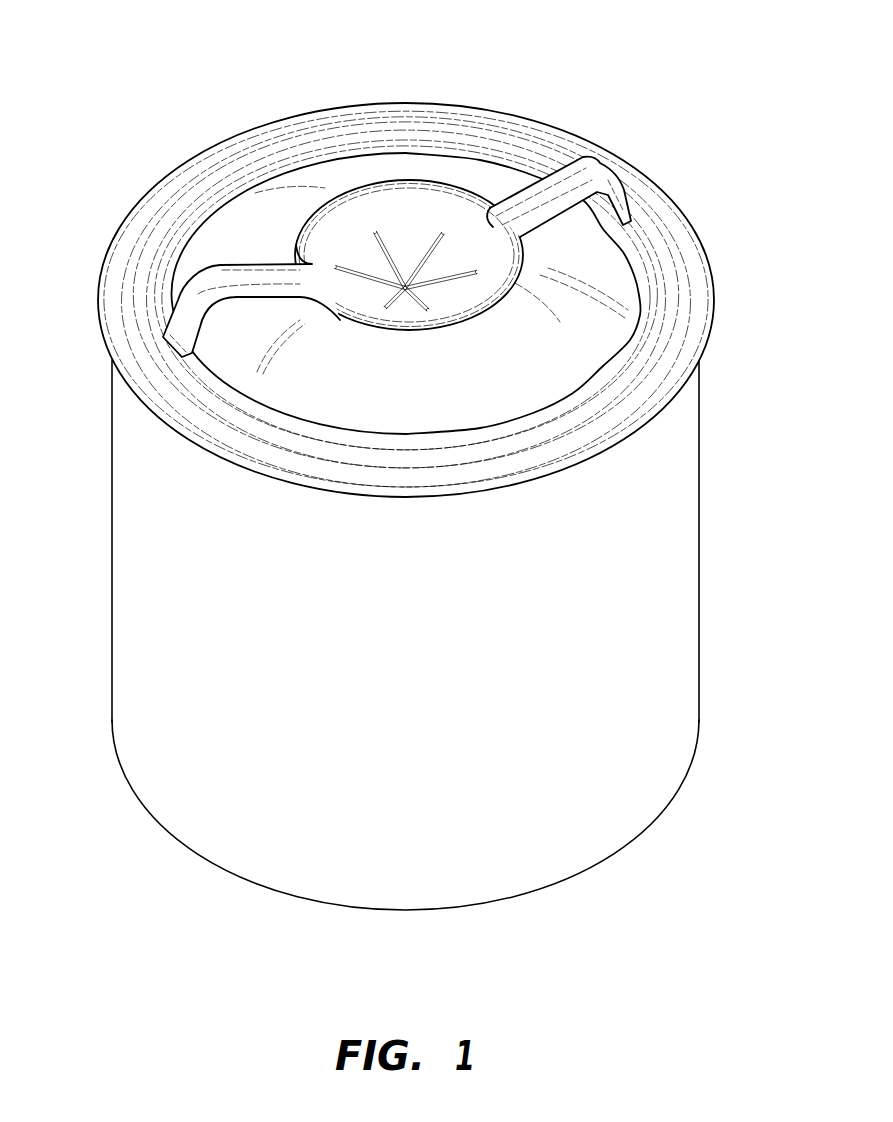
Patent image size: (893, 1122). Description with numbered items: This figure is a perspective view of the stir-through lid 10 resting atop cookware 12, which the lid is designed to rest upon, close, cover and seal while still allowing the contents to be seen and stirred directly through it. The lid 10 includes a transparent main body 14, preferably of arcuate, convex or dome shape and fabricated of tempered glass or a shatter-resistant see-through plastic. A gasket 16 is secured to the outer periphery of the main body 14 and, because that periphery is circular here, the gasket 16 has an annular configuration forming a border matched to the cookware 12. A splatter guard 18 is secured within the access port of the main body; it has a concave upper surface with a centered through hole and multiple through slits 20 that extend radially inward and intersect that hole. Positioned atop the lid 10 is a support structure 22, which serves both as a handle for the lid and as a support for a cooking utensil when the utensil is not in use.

The stir-through lid 10 is at (112, 34).
The cookware 12 is at (676, 589).
The transparent main body 14 is at (597, 277).
The gasket 16 is at (667, 335).
The splatter guard 18 is at (428, 205).
The through slits 20 is at (354, 270).
The support structure 22 is at (183, 312).